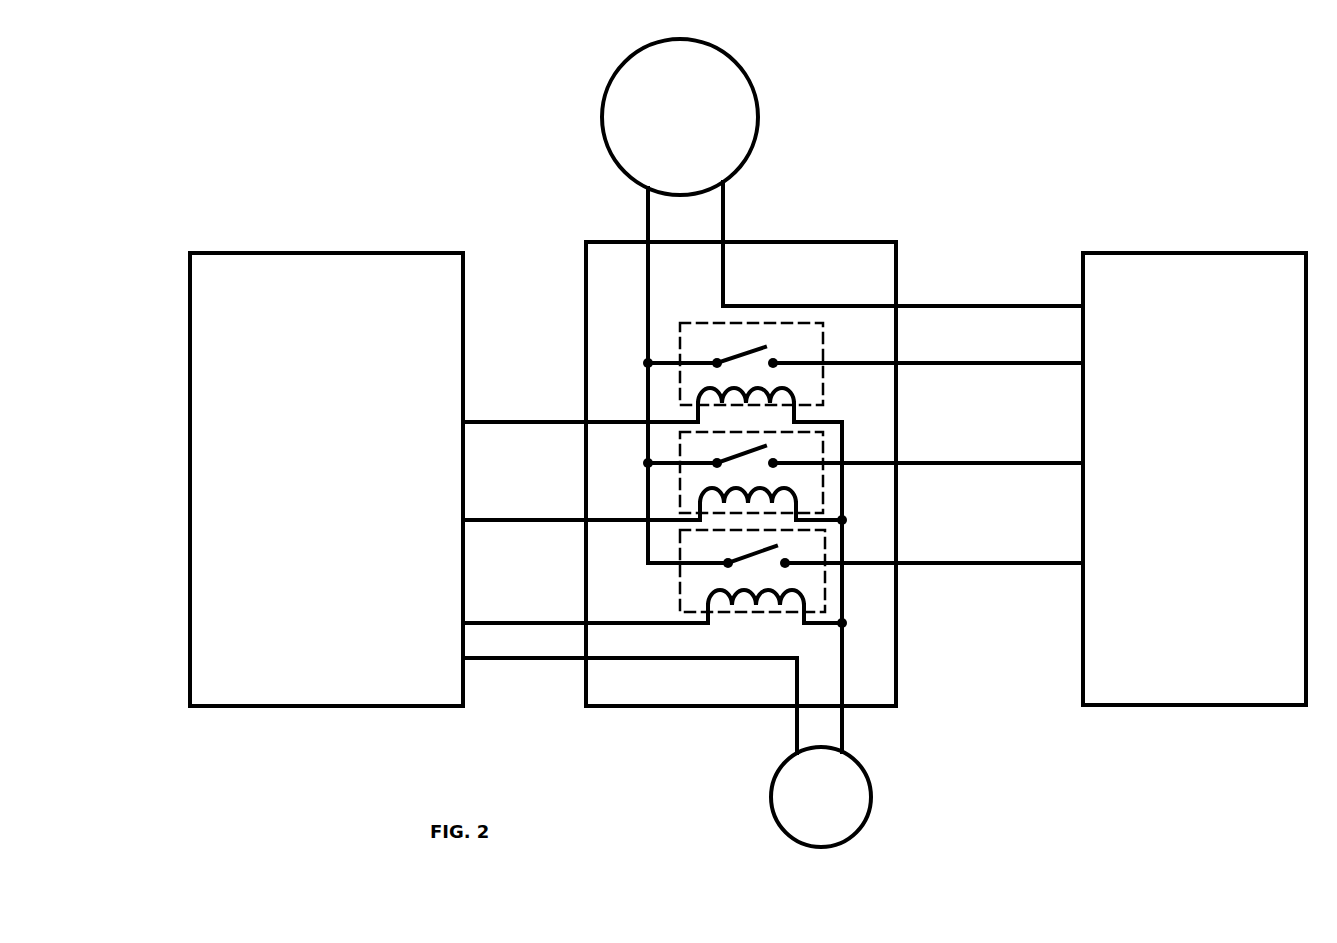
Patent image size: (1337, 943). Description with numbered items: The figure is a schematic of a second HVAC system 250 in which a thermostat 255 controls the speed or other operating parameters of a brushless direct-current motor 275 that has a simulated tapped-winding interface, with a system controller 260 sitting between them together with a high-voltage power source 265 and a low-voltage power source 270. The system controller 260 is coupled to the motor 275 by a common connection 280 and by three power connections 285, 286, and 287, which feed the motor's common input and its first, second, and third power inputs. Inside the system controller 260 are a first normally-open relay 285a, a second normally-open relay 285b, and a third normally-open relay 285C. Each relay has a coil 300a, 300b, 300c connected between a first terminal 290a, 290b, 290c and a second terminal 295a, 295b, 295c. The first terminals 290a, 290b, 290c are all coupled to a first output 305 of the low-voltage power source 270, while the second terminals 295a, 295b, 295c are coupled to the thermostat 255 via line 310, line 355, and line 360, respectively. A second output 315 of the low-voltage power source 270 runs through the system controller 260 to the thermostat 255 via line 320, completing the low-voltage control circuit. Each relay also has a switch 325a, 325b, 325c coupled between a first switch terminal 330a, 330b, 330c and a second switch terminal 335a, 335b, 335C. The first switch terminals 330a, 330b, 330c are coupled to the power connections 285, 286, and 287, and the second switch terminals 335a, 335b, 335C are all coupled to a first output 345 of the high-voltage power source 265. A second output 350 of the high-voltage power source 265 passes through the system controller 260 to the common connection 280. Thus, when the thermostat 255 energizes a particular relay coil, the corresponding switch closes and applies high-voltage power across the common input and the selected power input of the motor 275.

The second HVAC system 250 is at (298, 127).
The thermostat 255 is at (330, 252).
The system controller 260 is at (583, 242).
The high-voltage power source 265 is at (748, 72).
The low-voltage power source 270 is at (770, 818).
The brushless direct-current (BLDC) motor 275 is at (1135, 707).
The common connection 280 is at (998, 303).
The power connection 285 is at (998, 361).
The power connection 286 is at (1000, 461).
The power connection 287 is at (1000, 560).
The first normally-open relay 285a is at (678, 327).
The second normally-open relay 285b is at (678, 453).
The third normally-open relay 285C is at (680, 583).
The first terminal 290a is at (797, 403).
The first terminal 290b is at (800, 507).
The first terminal 290c is at (845, 624).
The second terminal 295a is at (692, 407).
The second terminal 295b is at (695, 510).
The second terminal 295c is at (700, 612).
The coil 300a is at (789, 386).
The coil 300b is at (800, 487).
The coil 300c is at (808, 594).
The first output 305 is at (848, 752).
The line 310 is at (524, 390).
The second output 315 is at (797, 748).
The line 320 is at (630, 696).
The switch 325a is at (758, 345).
The switch 325b is at (760, 447).
The switch 325c is at (752, 552).
The first switch terminal 330a is at (825, 362).
The first switch terminal 330b is at (829, 462).
The first switch terminal 330c is at (842, 566).
The second switch terminal 335a is at (676, 362).
The second switch terminal 335b is at (678, 463).
The second switch terminal 335C is at (680, 566).
The first output 345 is at (643, 192).
The second output 350 is at (728, 188).
The line 355 is at (566, 425).
The line 360 is at (604, 530).